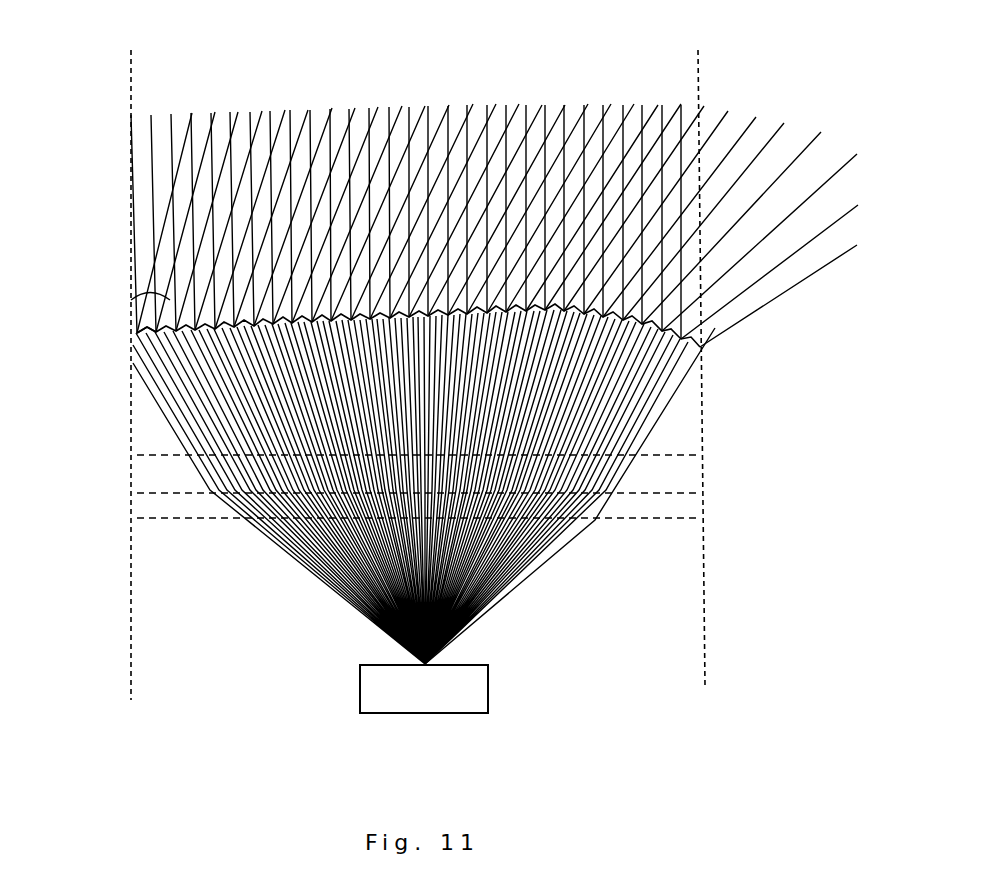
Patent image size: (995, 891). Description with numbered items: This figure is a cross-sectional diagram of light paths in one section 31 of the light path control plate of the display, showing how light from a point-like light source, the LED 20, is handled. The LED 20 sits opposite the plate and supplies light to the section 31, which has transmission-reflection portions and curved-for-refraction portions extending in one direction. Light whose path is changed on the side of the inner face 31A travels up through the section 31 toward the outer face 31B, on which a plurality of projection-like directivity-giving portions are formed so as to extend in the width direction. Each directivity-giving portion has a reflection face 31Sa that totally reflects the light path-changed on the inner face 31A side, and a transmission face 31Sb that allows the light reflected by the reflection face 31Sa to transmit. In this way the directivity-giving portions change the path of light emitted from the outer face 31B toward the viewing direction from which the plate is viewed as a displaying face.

The LED 20 is at (482, 702).
The section 31 is at (190, 350).
The inner face 31A is at (642, 519).
The outer face 31B is at (117, 283).
The reflection face 31Sa is at (137, 345).
The transmission face 31Sb is at (137, 360).